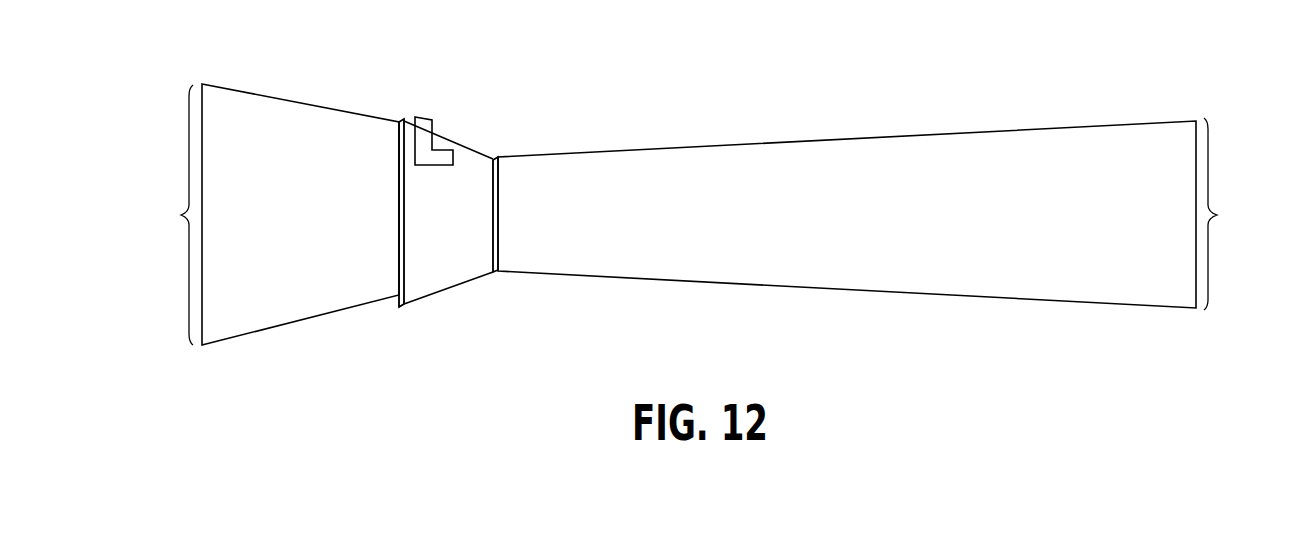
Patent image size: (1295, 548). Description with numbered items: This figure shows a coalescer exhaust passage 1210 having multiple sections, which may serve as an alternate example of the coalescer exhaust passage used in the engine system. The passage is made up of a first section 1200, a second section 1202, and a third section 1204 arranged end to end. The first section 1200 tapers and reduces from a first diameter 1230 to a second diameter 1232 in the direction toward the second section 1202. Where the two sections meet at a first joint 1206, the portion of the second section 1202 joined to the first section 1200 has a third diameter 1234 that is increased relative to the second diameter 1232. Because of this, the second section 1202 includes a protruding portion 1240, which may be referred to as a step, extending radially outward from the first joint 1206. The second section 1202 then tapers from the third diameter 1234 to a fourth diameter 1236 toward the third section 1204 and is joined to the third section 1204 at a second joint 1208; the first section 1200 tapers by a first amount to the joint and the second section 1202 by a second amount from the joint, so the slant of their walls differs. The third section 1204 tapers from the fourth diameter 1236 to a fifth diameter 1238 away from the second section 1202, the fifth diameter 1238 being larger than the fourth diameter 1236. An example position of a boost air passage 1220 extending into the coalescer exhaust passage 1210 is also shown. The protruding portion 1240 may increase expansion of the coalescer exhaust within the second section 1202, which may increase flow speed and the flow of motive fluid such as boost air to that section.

The first section 1200 is at (281, 226).
The second section 1202 is at (425, 226).
The third section 1204 is at (826, 226).
The first joint 1206 is at (400, 183).
The second joint 1208 is at (502, 197).
The coalescer exhaust passage 1210 is at (687, 88).
The boost air passage 1220 is at (436, 143).
The first diameter 1230 is at (181, 215).
The second diameter 1232 is at (394, 219).
The third diameter 1234 is at (405, 219).
The fourth diameter 1236 is at (492, 218).
The fifth diameter 1238 is at (1218, 215).
The protruding portion 1240 is at (400, 306).